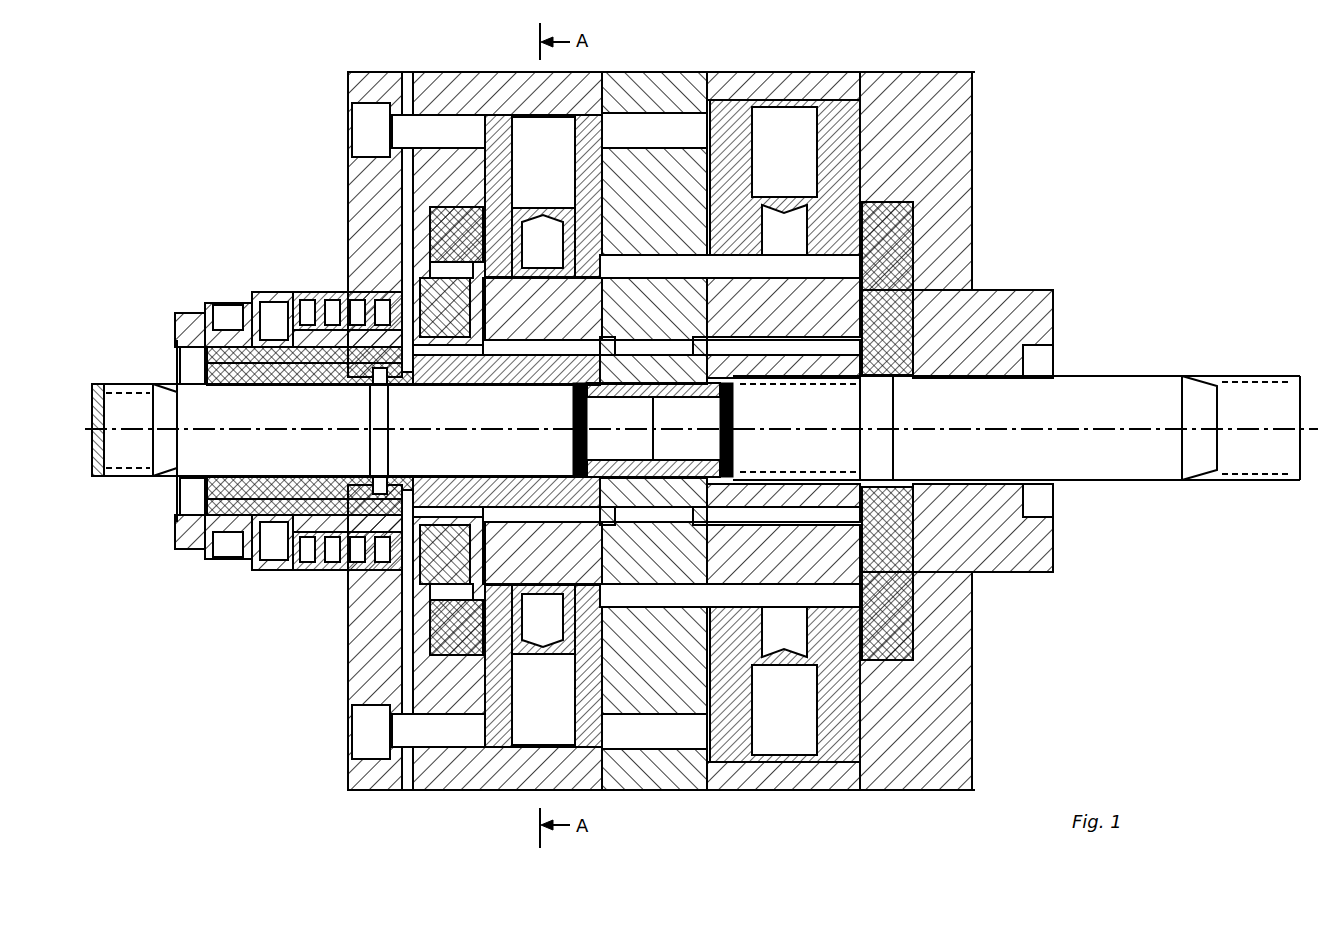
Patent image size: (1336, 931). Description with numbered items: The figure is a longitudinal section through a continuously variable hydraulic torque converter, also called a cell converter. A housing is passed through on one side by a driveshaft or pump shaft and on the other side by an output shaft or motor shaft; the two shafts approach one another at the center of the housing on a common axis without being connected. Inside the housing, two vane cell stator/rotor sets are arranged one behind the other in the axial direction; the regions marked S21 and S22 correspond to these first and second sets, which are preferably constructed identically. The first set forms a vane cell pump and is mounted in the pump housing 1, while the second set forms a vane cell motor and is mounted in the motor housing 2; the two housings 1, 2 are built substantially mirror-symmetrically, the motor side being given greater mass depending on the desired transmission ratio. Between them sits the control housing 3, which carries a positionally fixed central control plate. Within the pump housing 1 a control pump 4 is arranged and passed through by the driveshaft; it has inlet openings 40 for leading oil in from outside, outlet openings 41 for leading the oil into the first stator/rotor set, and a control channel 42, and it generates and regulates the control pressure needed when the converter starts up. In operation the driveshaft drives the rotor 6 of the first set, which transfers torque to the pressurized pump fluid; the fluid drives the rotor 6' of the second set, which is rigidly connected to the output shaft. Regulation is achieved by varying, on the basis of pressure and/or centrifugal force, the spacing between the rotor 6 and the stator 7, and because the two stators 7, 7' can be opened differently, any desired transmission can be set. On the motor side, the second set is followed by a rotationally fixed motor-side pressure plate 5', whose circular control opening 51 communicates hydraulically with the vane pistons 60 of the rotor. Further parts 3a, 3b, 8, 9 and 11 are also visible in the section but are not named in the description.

The pump housing 1 is at (365, 71).
The motor housing 2 is at (940, 71).
The control housing 3 is at (655, 71).
The first toothing of gear wheel 3a is at (603, 135).
The second toothing of gear wheel 3b is at (603, 268).
The control pump 4 is at (300, 293).
The inlet openings 40 is at (223, 302).
The outlet openings 41 is at (345, 290).
The control channel 42 is at (407, 71).
The motor-side pressure plate 5' is at (659, 567).
The circular control opening 51 is at (348, 572).
The rotor 6 is at (686, 355).
The rotor 6' is at (942, 573).
The vane pistons 60 is at (880, 272).
The stator 7 is at (394, 615).
The stator 7' is at (934, 681).
The input shaft 8 is at (118, 479).
The roller bearing 9 is at (405, 327).
The output shaft 11 is at (1142, 481).
The first gear stage S21 is at (490, 68).
The second gear stage S22 is at (768, 68).